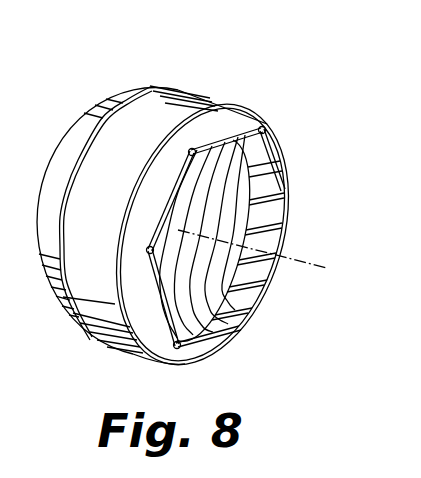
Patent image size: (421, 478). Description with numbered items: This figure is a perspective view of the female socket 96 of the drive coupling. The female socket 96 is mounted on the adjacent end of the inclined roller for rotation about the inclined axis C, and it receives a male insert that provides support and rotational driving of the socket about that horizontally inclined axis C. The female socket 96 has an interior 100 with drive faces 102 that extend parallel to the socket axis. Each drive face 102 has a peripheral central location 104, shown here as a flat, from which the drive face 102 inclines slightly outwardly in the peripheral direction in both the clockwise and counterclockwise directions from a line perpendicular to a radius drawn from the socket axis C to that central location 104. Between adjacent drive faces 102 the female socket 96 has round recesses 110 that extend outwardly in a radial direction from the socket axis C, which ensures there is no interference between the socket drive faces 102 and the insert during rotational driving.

The female socket 96 is at (229, 76).
The interior 100 is at (260, 191).
The drive faces 102 is at (246, 155).
The peripheral central location 104 is at (280, 188).
The recesses 110 is at (264, 222).
The inclined axis C is at (313, 262).